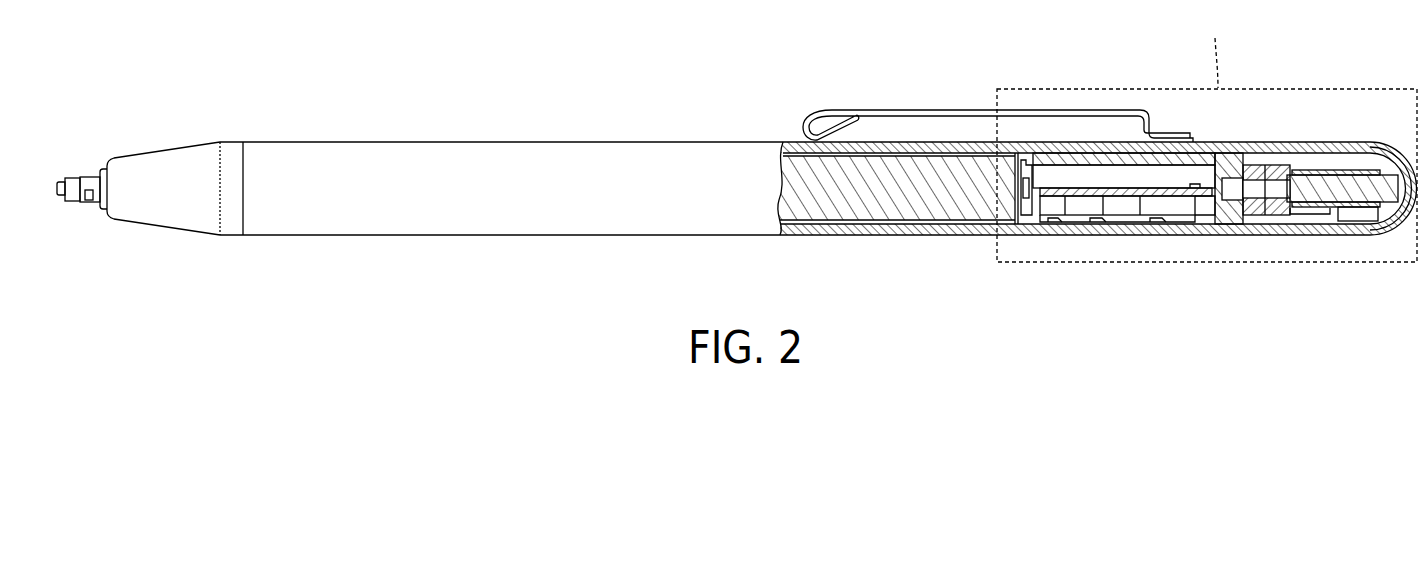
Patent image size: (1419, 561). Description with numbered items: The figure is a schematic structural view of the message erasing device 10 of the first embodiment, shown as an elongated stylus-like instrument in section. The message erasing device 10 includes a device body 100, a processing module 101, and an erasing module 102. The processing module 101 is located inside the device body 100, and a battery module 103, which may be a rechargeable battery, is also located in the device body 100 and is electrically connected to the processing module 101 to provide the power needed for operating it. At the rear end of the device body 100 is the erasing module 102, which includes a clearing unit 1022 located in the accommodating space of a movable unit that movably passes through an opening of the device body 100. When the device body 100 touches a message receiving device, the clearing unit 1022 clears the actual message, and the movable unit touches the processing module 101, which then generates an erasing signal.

The message erasing device 10 is at (737, 159).
The device body 100 is at (570, 162).
The battery module 103 is at (906, 172).
The processing module 101 is at (1107, 188).
The erasing module 102 is at (1365, 222).
The clearing unit 1022 is at (1333, 187).